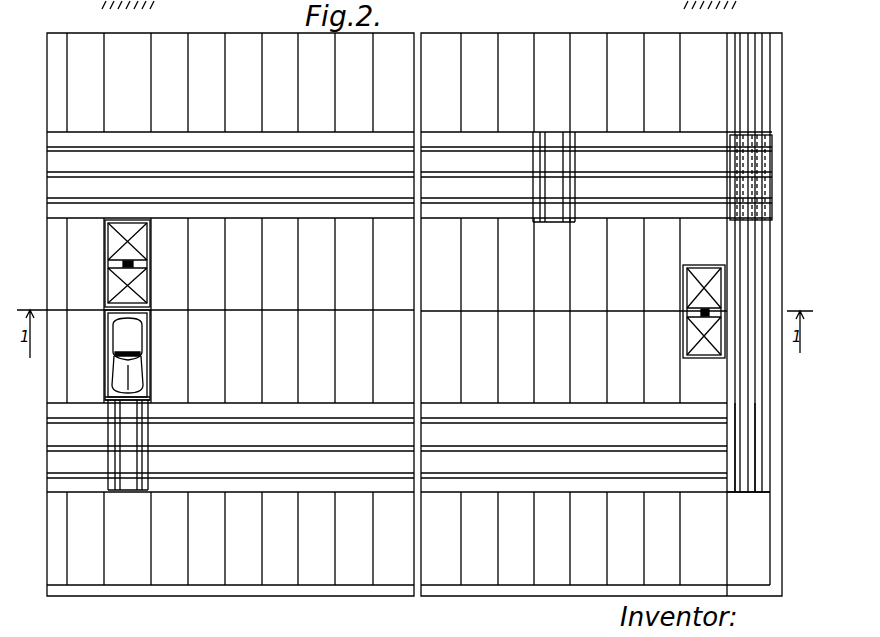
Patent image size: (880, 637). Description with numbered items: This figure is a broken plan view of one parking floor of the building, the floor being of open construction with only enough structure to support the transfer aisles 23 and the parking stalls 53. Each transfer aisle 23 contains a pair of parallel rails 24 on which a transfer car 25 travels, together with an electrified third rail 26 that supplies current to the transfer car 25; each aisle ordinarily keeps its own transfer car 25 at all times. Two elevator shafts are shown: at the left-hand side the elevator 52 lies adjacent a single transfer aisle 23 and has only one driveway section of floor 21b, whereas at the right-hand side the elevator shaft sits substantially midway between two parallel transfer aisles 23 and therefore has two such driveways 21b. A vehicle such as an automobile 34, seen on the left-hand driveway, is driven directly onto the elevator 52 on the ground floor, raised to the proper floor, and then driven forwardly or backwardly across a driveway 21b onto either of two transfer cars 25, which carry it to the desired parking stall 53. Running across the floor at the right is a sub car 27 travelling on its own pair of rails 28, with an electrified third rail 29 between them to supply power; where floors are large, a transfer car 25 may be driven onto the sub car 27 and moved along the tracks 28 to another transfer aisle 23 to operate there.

The transfer aisle 23 is at (272, 139).
The rails 24 is at (502, 200).
The electrified third rail 26 is at (350, 176).
The transfer car 25 is at (127, 441).
The sub car 27 is at (730, 191).
The sub car rails 28 is at (758, 450).
The electrified third rail 29 is at (745, 368).
The elevator 52 is at (135, 259).
The vehicle 34 is at (128, 344).
The floor section 21b is at (150, 387).
The parking stall 53 is at (243, 387).